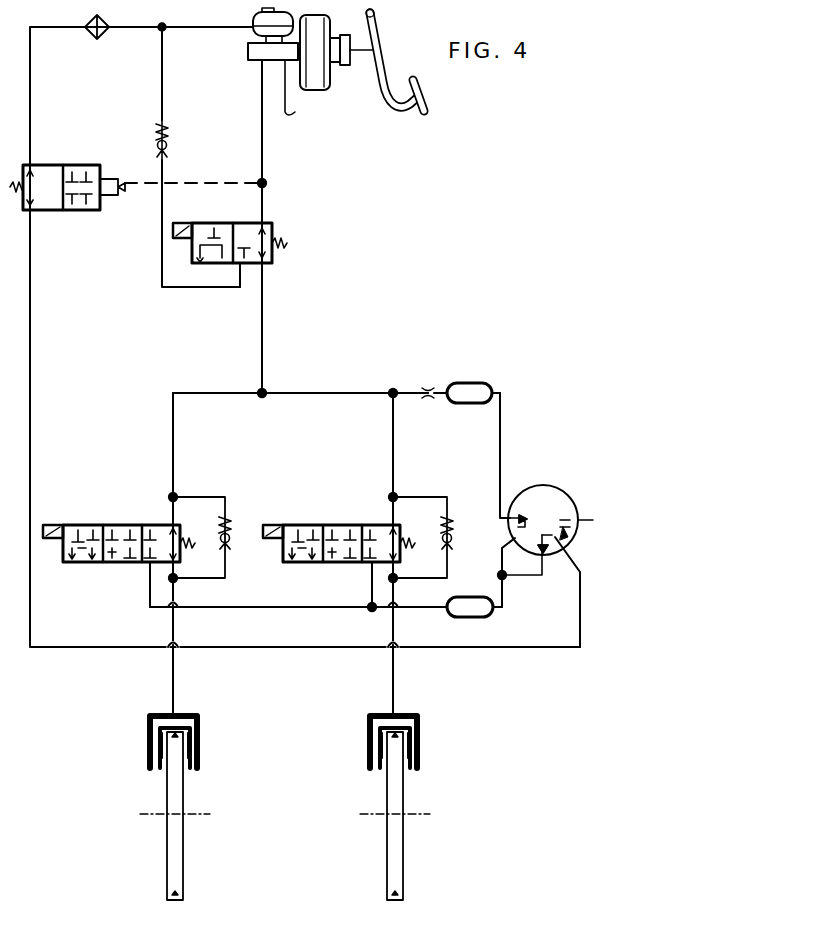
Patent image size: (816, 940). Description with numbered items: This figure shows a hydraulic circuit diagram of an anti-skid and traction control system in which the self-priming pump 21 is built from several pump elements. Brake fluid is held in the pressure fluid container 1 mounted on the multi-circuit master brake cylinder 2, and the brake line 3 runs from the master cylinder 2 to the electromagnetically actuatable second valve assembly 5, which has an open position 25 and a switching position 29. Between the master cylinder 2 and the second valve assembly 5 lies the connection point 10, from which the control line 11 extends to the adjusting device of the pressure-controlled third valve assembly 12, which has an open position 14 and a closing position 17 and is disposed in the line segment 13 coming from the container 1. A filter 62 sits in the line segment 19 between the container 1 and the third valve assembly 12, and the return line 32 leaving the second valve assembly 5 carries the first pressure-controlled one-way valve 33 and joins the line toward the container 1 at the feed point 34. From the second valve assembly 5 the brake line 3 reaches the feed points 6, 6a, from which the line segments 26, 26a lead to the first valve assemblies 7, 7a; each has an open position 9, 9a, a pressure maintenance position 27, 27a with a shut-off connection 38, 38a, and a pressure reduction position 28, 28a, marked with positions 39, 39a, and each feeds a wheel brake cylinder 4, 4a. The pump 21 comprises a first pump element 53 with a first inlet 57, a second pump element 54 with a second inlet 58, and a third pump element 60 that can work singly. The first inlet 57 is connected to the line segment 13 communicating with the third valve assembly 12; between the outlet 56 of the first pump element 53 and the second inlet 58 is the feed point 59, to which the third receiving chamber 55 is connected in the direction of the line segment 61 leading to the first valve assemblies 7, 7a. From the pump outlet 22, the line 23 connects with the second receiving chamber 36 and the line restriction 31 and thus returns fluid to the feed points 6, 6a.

The pressure fluid container 1 is at (258, 20).
The multi-circuit master brake cylinder 2 is at (248, 52).
The brake line 3 is at (264, 147).
The wheel brake cylinder 4 is at (200, 742).
The wheel brake cylinder 4a is at (420, 742).
The second valve assembly 5 is at (180, 230).
The feed point 6 is at (264, 390).
The feed point 6a is at (393, 390).
The first valve assembly 7 is at (50, 538).
The first valve assembly 7a is at (270, 538).
The open position 9 is at (170, 496).
The open position 9a is at (390, 496).
The connection point 10 is at (265, 185).
The control line 11 is at (200, 183).
The third valve assembly 12 is at (48, 166).
The line segment 13 is at (31, 390).
The open position 14 is at (31, 212).
The closing position 17 is at (82, 212).
The line segment 19 is at (31, 90).
The self-priming pump 21 is at (545, 490).
The outlet 22 is at (501, 515).
The line 23 is at (394, 391).
The open position 25 is at (241, 288).
The line segment 26 is at (175, 430).
The line segment 26a is at (395, 445).
The pressure maintenance position 27 is at (120, 528).
The pressure maintenance position 27a is at (342, 528).
The pressure reduction position 28 is at (70, 530).
The pressure reduction position 28a is at (292, 530).
The switching position 29 is at (205, 240).
The line restriction 31 is at (426, 390).
The return line 32 is at (161, 270).
The first pressure-controlled one-way valve 33 is at (166, 145).
The feed point 34 is at (164, 32).
The second receiving chamber 36 is at (471, 392).
The shut-off connection 38 is at (125, 563).
The shut-off connection 38a is at (346, 563).
The valve position 39 is at (80, 563).
The valve position 39a is at (300, 563).
The first pump element 53 is at (548, 553).
The second pump element 54 is at (512, 520).
The third receiving chamber 55 is at (462, 612).
The outlet 56 is at (537, 548).
The first inlet 57 is at (568, 540).
The second inlet 58 is at (508, 542).
The feed point 59 is at (504, 578).
The third pump element 60 is at (563, 500).
The line segment 61 is at (262, 608).
The filter 62 is at (97, 40).